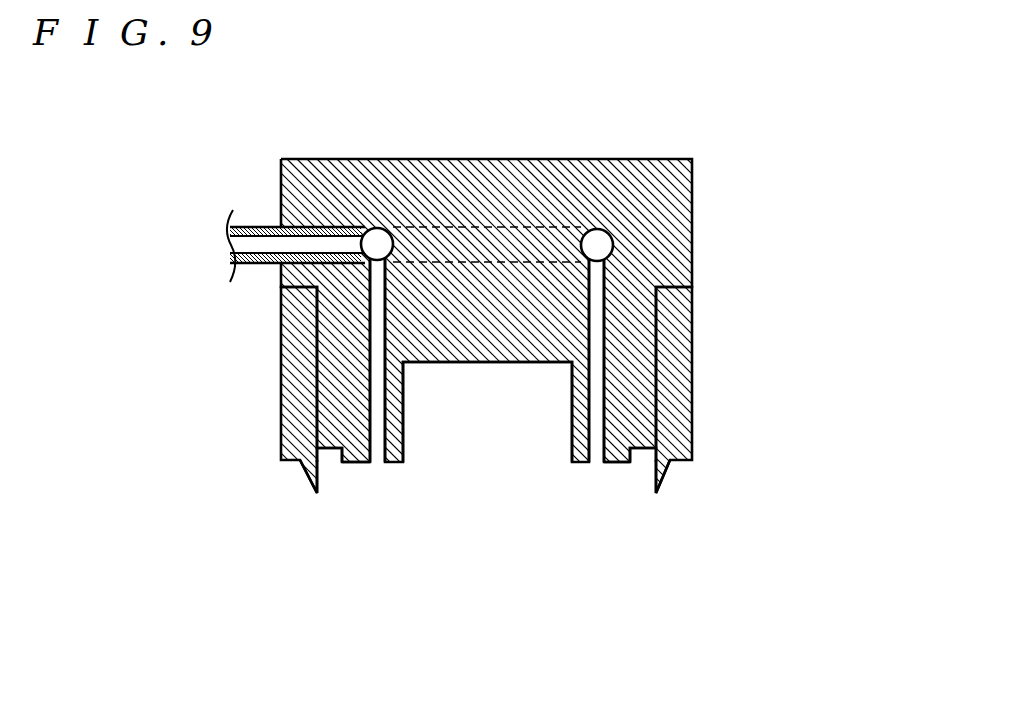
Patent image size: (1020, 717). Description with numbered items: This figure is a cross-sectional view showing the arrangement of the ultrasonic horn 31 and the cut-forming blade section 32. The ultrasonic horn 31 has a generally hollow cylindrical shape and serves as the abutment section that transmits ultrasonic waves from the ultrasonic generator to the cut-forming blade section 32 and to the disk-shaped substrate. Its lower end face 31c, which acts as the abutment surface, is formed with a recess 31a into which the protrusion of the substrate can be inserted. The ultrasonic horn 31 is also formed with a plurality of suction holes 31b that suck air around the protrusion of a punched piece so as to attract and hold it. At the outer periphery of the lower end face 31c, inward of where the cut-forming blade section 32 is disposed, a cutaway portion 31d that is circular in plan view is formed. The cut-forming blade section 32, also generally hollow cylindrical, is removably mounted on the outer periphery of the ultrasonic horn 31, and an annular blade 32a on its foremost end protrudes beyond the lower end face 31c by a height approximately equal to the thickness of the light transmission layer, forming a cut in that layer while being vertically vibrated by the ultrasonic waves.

The ultrasonic horn 31 is at (690, 237).
The recess 31a is at (510, 417).
The suction holes 31b is at (382, 459).
The lower end face 31c is at (363, 476).
The cutaway portion 31d is at (337, 470).
The cut-forming blade section 32 is at (290, 396).
The blade 32a is at (305, 470).